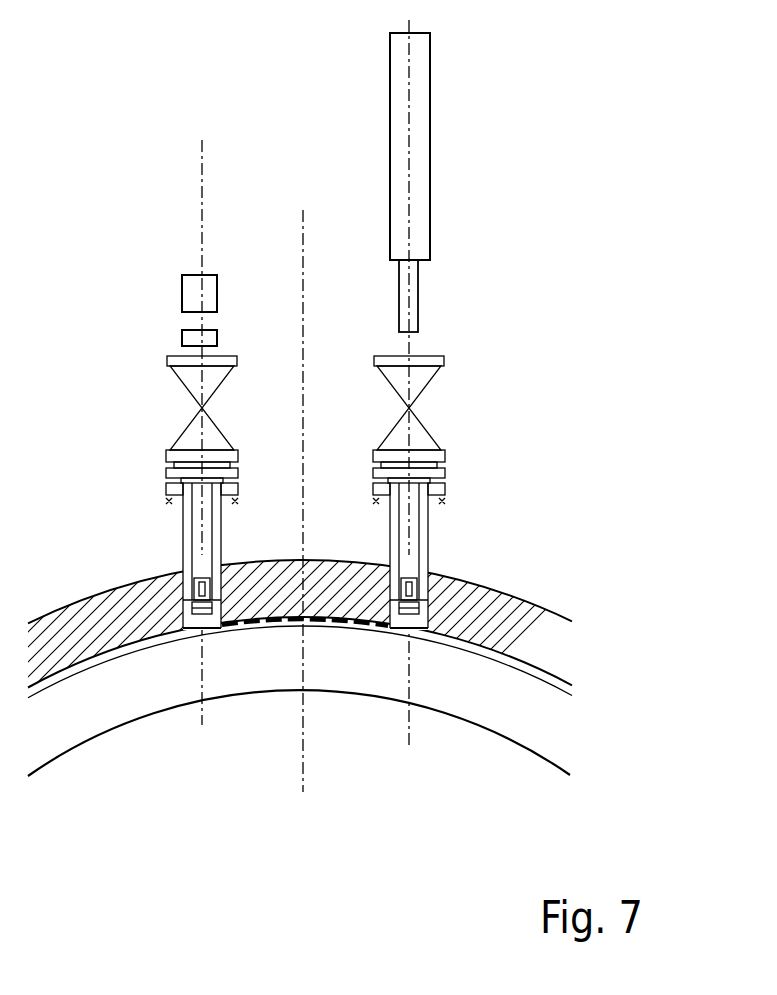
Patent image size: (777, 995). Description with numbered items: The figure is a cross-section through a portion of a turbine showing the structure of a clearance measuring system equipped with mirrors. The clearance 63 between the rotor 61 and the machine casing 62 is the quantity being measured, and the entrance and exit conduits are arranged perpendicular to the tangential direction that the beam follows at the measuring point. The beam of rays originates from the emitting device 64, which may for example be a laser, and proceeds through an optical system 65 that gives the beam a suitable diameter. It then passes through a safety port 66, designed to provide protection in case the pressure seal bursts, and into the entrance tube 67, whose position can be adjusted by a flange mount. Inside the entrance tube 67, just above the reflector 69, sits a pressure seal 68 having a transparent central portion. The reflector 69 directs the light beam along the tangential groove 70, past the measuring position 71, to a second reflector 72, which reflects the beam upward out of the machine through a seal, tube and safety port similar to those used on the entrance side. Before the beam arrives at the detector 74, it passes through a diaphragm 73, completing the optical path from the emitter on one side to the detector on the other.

The rotor 61 is at (538, 730).
The machine casing 62 is at (540, 640).
The clearance 63 is at (572, 693).
The emitting device 64 is at (420, 145).
The optical system 65 is at (410, 300).
The safety port 66 is at (417, 439).
The entrance tube 67 is at (430, 523).
The pressure seal 68 is at (433, 576).
The reflector 69 is at (427, 608).
The tangential groove 70 is at (386, 622).
The measuring position 71 is at (300, 623).
The second reflector 72 is at (197, 630).
The diaphragm 73 is at (190, 338).
The detector 74 is at (198, 293).